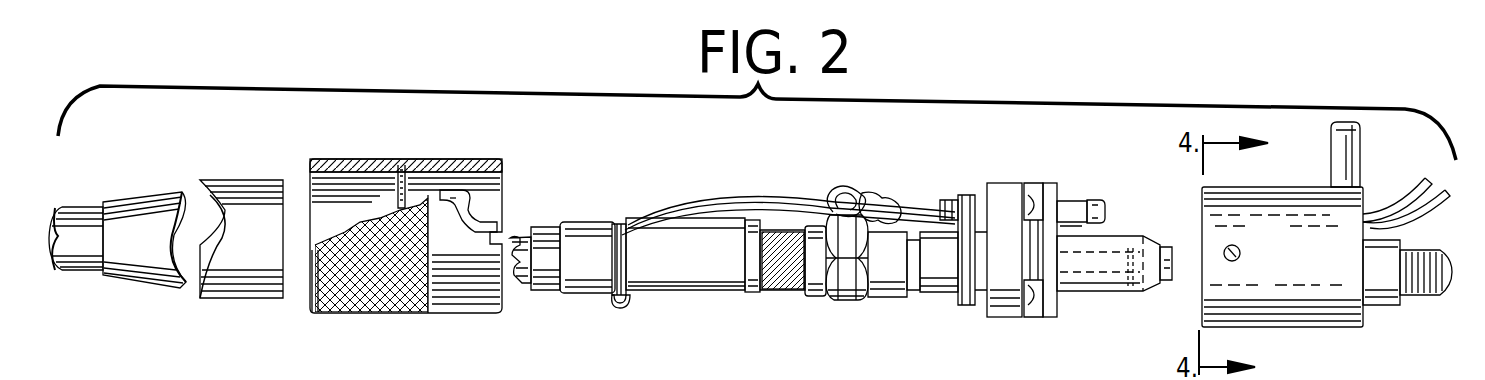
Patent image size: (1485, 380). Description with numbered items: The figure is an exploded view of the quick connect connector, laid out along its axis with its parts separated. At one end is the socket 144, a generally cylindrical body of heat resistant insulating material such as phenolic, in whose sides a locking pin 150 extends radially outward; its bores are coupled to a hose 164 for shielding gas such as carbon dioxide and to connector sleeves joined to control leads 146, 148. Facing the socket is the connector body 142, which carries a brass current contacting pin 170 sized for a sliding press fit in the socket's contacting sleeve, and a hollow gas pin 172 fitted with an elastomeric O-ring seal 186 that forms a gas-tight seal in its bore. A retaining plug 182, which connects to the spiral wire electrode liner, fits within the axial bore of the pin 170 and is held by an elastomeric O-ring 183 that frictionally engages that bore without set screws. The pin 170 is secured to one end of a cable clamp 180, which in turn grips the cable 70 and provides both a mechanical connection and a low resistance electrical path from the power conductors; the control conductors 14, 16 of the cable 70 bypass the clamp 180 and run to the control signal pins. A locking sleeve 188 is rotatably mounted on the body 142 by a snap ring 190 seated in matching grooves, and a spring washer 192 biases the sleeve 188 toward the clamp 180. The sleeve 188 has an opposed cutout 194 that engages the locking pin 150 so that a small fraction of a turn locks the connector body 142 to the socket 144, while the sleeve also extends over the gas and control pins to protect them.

The control conductor 14 is at (640, 210).
The control conductor 16 is at (673, 222).
The cable 70 is at (545, 238).
The connector body 142 is at (1003, 195).
The socket 144 is at (1285, 200).
The control lead 146 is at (1418, 186).
The control lead 148 is at (1432, 203).
The locking pin 150 is at (1235, 258).
The hose 164 is at (1340, 145).
The current contacting pin 170 is at (1122, 242).
The gas pin 172 is at (1070, 208).
The cable clamp 180 is at (851, 265).
The retaining plug 182 is at (1162, 255).
The O-ring 183 is at (1128, 290).
The O-ring seal 186 is at (1093, 198).
The locking sleeve 188 is at (345, 168).
The snap ring 190 is at (402, 165).
The spring washer 192 is at (1032, 190).
The cutout 194 is at (462, 215).